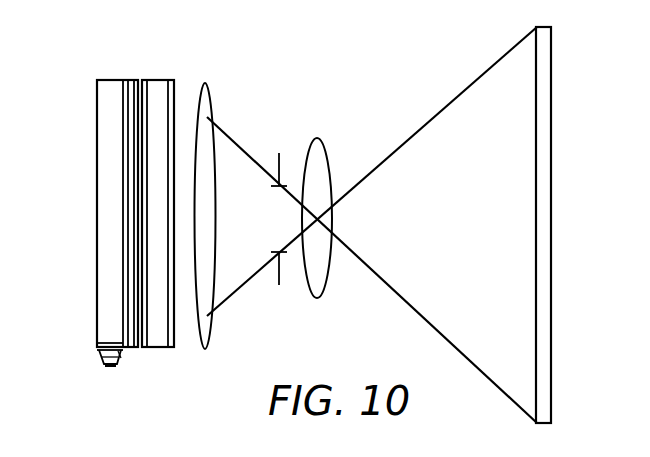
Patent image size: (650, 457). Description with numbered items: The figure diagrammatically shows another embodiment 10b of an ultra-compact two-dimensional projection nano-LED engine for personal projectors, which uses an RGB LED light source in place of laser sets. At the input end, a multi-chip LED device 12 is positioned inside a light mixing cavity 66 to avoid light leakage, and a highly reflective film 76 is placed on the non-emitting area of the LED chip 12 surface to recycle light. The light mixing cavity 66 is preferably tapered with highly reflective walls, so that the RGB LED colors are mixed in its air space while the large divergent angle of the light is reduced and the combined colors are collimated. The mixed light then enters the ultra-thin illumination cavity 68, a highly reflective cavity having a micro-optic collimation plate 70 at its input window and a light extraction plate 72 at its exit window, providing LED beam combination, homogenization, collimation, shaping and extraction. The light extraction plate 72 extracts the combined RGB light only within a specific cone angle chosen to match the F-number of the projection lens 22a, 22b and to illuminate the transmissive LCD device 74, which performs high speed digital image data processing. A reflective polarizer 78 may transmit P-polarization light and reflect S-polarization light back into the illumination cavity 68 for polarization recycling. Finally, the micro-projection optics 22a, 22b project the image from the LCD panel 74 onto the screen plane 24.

The projection engine embodiment 10b is at (96, 46).
The ultra-thin illumination cavity 68 is at (110, 172).
The reflective polarizer 78 is at (130, 107).
The light extraction plate 72 is at (122, 234).
The transmissive LCD device 74 is at (161, 87).
The micro-optic collimation plate 70 is at (104, 350).
The light mixing cavity 66 is at (107, 362).
The highly reflective film 76 is at (120, 356).
The multi-chip LED device 12 is at (110, 368).
The micro-projection optics 22a is at (211, 89).
The micro-projection optics 22b is at (332, 142).
The screen plane 24 is at (551, 178).